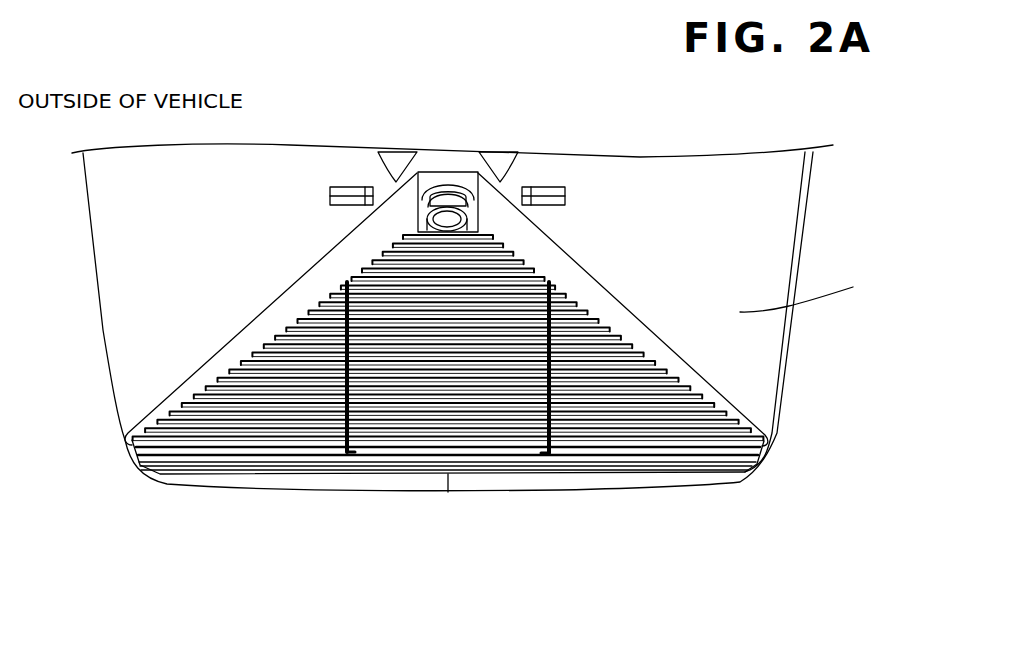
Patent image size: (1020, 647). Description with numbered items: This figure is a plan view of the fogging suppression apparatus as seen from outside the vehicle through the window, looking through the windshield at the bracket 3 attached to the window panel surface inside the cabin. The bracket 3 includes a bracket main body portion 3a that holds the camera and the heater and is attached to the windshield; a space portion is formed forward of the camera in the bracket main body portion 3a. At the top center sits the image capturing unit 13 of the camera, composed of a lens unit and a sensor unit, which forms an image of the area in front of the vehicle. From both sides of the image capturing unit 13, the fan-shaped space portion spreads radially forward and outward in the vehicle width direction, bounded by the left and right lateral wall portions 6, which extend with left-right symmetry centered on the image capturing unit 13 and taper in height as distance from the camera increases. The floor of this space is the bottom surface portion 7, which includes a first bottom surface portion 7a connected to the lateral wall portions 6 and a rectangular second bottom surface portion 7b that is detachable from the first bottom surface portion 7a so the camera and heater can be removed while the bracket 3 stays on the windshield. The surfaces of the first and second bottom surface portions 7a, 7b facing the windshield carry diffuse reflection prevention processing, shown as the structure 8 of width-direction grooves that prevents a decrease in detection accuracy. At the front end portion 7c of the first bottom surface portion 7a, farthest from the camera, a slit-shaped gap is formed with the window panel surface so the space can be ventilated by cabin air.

The bracket 3 is at (683, 153).
The bracket main body portion 3a is at (817, 295).
The left and right lateral wall portions 6 is at (309, 287).
The bottom surface portion 7 is at (623, 575).
The first bottom surface portion 7a is at (590, 432).
The second bottom surface portion 7b is at (505, 432).
The front end portion 7c is at (403, 432).
The structure for preventing a decrease in surroundings-detecting accuracy 8 is at (220, 390).
The image capturing unit 13 is at (445, 227).